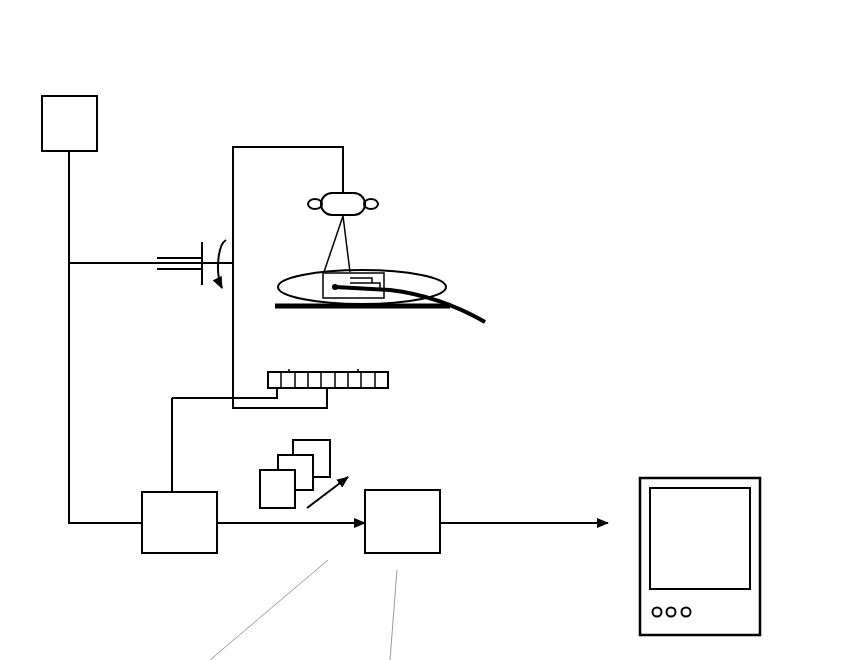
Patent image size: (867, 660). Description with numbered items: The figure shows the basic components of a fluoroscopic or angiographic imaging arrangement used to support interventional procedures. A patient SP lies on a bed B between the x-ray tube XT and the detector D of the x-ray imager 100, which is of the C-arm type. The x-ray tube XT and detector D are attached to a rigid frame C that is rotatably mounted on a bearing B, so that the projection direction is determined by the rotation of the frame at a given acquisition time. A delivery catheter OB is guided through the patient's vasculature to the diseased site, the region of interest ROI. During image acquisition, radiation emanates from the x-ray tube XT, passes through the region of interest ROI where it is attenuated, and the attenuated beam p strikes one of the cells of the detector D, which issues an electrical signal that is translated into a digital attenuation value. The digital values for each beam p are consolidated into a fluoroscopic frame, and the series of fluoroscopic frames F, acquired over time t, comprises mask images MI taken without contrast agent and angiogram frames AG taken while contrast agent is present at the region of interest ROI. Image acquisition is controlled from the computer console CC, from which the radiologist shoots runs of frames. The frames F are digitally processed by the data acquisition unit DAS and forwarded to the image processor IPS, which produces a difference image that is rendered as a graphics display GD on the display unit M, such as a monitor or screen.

The x-ray imager 100 is at (378, 90).
The computer console CC is at (78, 95).
The rigid frame C is at (233, 347).
The bearing B is at (183, 254).
The x-ray tube XT is at (353, 198).
The patient SP is at (437, 270).
The catheter OB is at (480, 310).
The region of interest ROI is at (348, 271).
The attenuated x-ray beam p is at (313, 338).
The detector D is at (388, 376).
The angiogram frames AG is at (328, 447).
The mask images MI is at (275, 486).
The fluoroscopic frames F is at (245, 451).
The time axis t is at (329, 497).
The data acquisition unit DAS is at (253, 522).
The image processor IPS is at (400, 490).
The display unit M is at (745, 612).
The graphics display GD is at (733, 553).